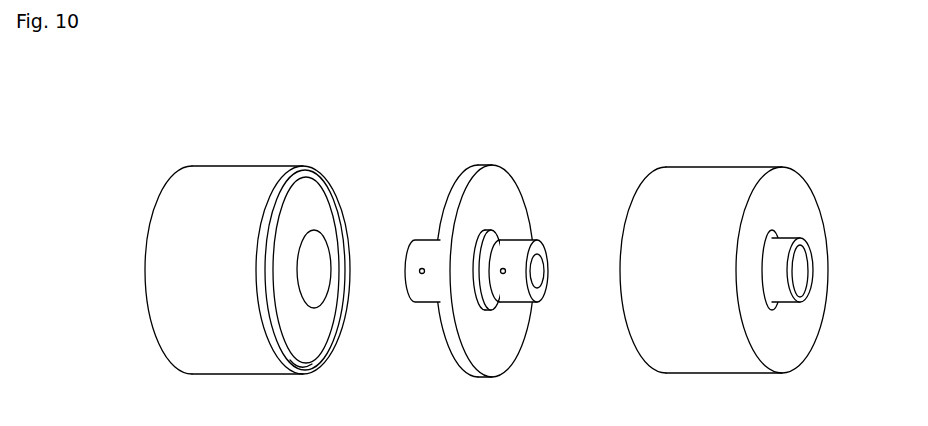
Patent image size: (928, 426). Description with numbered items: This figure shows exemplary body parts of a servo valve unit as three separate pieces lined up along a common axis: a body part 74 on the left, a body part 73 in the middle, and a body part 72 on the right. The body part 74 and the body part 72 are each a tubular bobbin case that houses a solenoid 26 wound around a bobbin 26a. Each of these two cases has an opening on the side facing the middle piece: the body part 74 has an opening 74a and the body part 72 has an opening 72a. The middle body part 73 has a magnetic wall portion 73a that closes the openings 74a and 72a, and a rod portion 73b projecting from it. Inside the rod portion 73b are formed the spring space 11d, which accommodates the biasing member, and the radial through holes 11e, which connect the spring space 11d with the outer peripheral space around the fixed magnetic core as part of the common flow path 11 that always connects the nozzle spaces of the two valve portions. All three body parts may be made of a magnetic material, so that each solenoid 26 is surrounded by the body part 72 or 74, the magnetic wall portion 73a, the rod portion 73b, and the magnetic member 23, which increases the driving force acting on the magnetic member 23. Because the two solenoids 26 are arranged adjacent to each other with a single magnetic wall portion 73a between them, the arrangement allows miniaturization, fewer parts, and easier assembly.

The body part 74 is at (220, 187).
The solenoid 26 is at (287, 184).
The bobbin 26a is at (309, 207).
The opening 74a is at (318, 368).
The body part 73 is at (473, 166).
The magnetic wall portion 73a is at (502, 200).
The rod portion 73b is at (529, 219).
The spring space 11d is at (539, 262).
The radial through hole 11e is at (511, 303).
The body part 72 is at (705, 180).
The opening 72a is at (634, 345).
The common flow path 11 is at (786, 236).
The magnetic member 23 is at (801, 300).